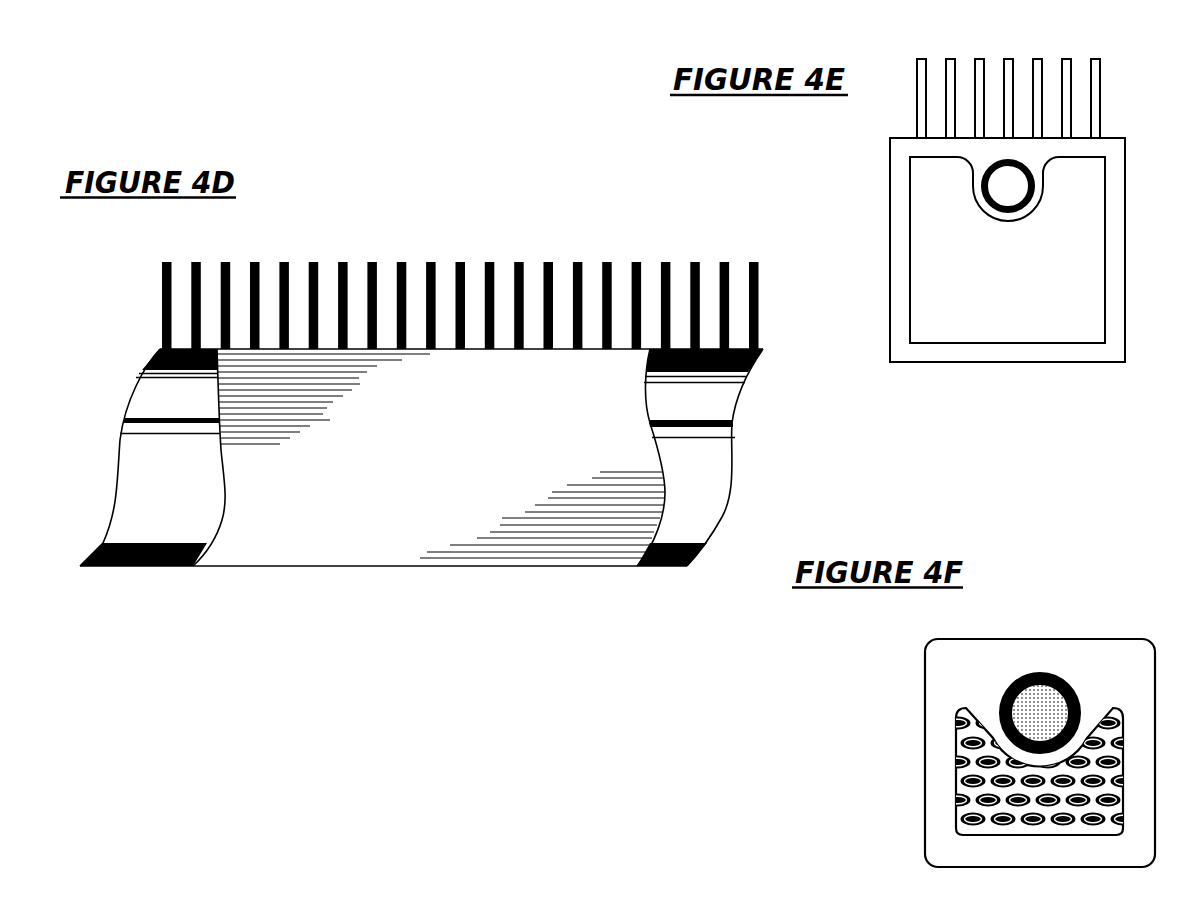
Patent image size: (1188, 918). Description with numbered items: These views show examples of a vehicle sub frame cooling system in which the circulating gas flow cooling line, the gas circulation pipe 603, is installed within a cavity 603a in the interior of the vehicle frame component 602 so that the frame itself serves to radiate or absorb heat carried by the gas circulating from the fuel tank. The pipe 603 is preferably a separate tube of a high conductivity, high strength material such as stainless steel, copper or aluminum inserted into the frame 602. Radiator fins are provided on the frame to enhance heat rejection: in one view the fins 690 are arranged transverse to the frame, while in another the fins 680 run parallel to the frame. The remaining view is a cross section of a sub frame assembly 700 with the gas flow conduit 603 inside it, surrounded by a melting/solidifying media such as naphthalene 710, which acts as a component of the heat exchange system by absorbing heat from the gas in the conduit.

In FIG. 4D, the vehicle frame component 602 is at (483, 567).
In FIG. 4E, the vehicle frame component 602 is at (1015, 363).
In FIG. 4D, the gas circulation pipe 603 is at (143, 393).
In FIG. 4E, the gas circulation pipe 603 is at (1010, 187).
In FIG. 4F, the gas circulation pipe 603 is at (1041, 713).
In FIG. 4D, the cavity 603a is at (142, 433).
In FIG. 4E, the cavity 603a is at (982, 210).
In FIG. 4D, the pins 690 is at (578, 263).
In FIG. 4E, the fins 680 is at (1043, 62).
In FIG. 4F, the sub frame assembly 700 is at (945, 687).
In FIG. 4F, the naphthalene 710 is at (982, 793).